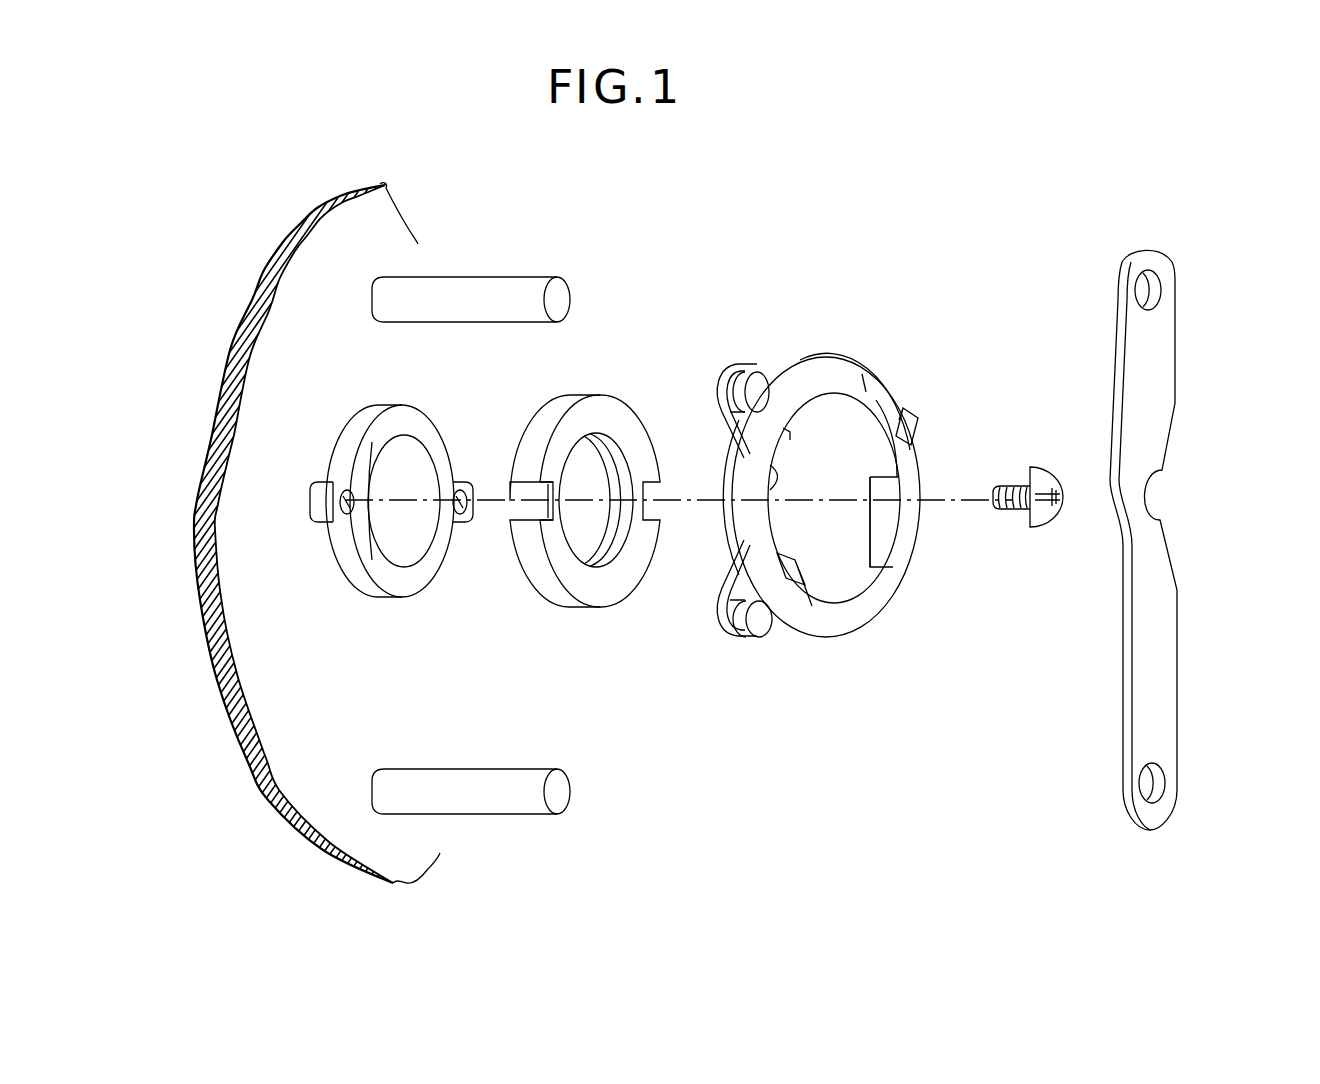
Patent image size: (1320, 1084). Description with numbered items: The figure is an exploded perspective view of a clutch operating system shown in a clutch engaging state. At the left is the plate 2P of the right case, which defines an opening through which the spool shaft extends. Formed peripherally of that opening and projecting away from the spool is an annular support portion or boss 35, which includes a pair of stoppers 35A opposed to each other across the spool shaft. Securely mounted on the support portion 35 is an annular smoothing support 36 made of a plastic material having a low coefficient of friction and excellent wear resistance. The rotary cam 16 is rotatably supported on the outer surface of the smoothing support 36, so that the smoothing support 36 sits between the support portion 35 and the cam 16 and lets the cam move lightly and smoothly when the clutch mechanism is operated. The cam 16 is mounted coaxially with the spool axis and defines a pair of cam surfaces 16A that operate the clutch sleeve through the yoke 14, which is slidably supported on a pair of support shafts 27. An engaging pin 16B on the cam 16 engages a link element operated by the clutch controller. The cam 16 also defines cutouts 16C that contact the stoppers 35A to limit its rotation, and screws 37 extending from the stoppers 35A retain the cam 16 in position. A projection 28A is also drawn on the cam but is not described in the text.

The plate 2P is at (273, 738).
The support shafts 27 is at (511, 288).
The support portion 35 is at (405, 580).
The stoppers 35A is at (322, 508).
The smoothing support 36 is at (606, 590).
The rotary cam 16 is at (856, 618).
The cam surfaces 16A is at (920, 420).
The engaging pin 16B is at (757, 382).
The cutouts 16C is at (778, 484).
The projection 28A is at (803, 568).
The screws 37 is at (1047, 514).
The yoke 14 is at (1160, 653).